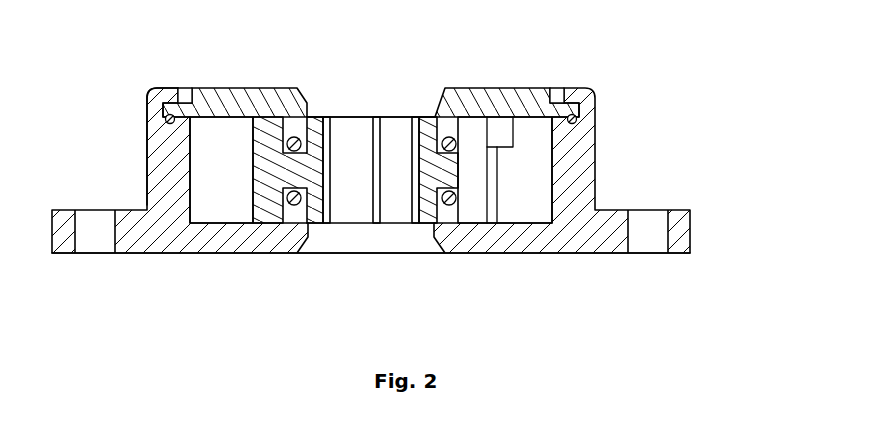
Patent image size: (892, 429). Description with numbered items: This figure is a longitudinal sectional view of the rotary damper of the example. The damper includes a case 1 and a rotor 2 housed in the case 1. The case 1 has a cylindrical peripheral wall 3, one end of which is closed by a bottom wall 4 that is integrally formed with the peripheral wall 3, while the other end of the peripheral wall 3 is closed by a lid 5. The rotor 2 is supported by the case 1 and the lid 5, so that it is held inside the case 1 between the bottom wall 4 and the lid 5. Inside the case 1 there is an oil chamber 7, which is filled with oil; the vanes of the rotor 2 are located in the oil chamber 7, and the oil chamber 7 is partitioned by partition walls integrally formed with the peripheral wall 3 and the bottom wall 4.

The case 1 is at (597, 142).
The rotor 2 is at (303, 146).
The peripheral wall 3 is at (147, 145).
The bottom wall 4 is at (228, 254).
The lid 5 is at (235, 88).
The oil chamber 7 is at (200, 175).